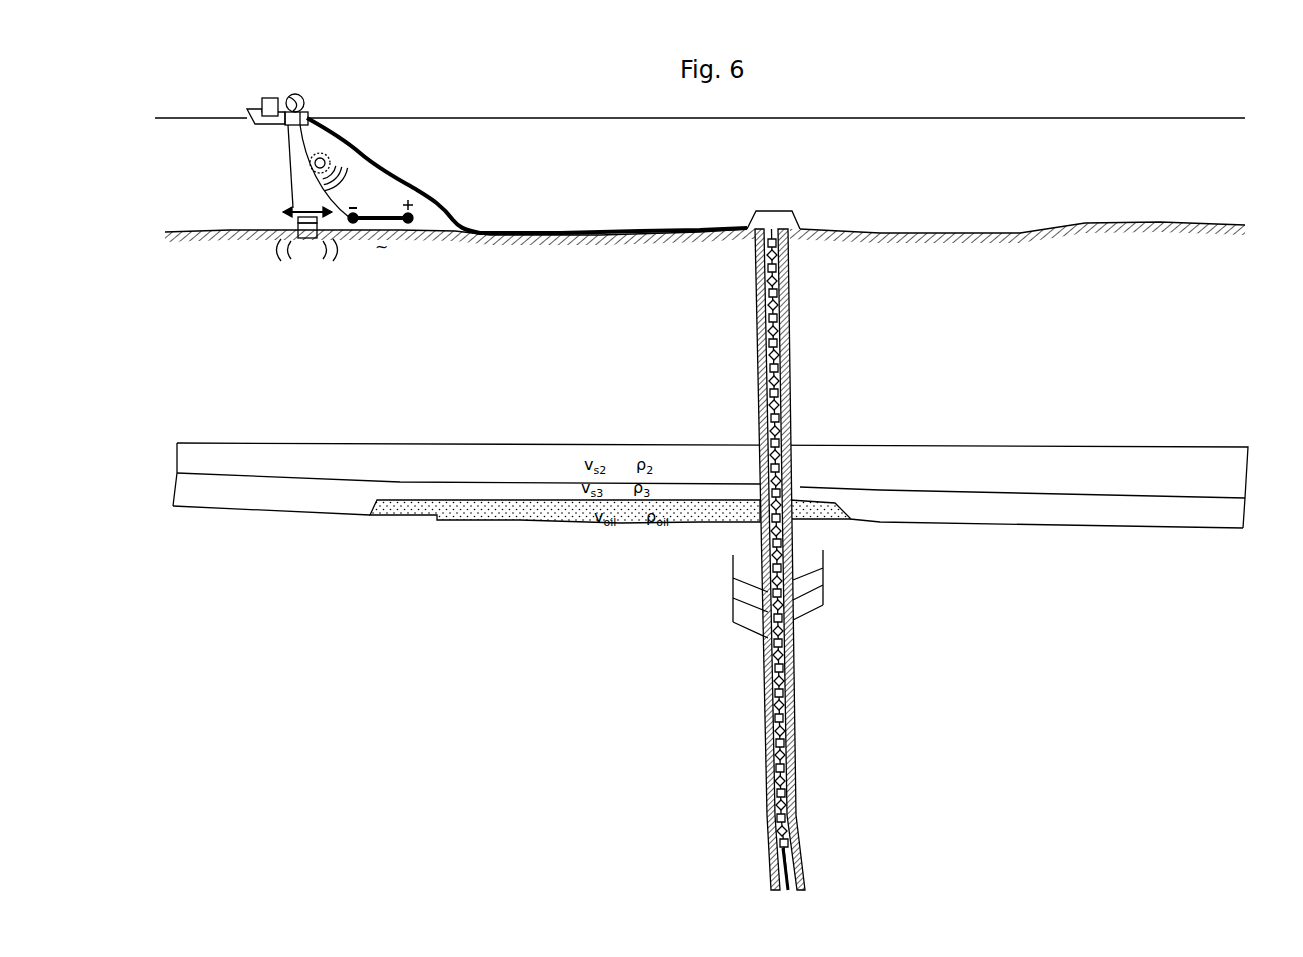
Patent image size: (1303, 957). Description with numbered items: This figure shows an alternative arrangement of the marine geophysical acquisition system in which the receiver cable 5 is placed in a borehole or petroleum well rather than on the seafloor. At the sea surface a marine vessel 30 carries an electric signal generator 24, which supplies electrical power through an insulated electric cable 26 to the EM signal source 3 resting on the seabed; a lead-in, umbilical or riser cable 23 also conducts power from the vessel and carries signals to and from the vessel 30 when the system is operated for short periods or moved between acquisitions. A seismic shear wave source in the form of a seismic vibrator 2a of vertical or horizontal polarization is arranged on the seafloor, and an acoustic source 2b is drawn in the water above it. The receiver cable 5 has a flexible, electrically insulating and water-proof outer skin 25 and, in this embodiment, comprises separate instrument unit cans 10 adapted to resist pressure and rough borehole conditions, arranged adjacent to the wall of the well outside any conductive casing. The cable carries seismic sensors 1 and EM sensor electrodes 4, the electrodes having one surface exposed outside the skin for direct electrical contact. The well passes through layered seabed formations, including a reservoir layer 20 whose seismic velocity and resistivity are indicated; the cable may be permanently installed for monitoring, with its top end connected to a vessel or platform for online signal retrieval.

The marine vessel 30 is at (270, 98).
The electric signal generator 24 is at (298, 92).
The insulated electric cable 26 is at (330, 206).
The acoustic source 2b is at (314, 160).
The seismic vibrator 2a is at (288, 210).
The lead-in, umbilical or riser cable 23 is at (382, 216).
The EM signal source 3 is at (386, 215).
The oil reservoir layer 20 is at (610, 513).
The instrument unit cans 10 is at (809, 559).
The receiver cable 5 is at (780, 400).
The outer skin 25 is at (777, 559).
The electrodes 4 is at (743, 593).
The seismic sensors 1 is at (833, 584).